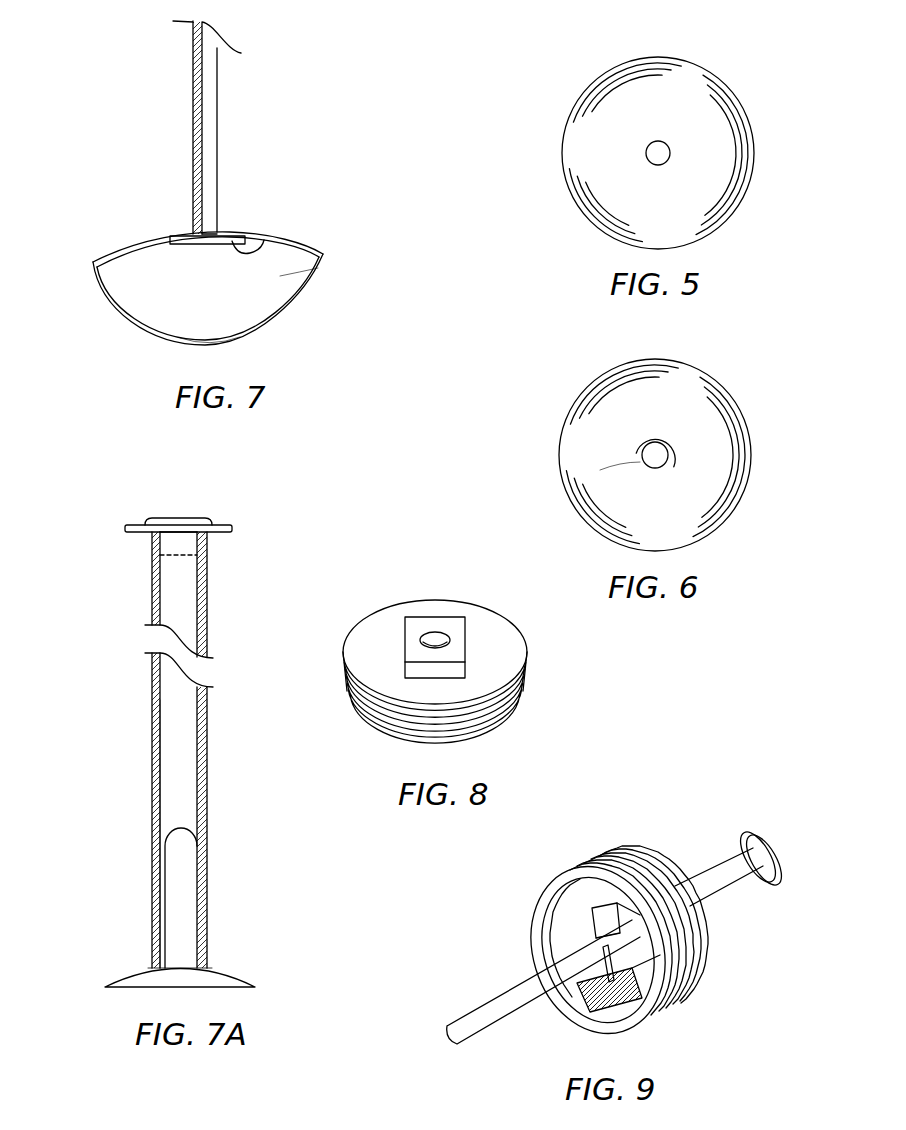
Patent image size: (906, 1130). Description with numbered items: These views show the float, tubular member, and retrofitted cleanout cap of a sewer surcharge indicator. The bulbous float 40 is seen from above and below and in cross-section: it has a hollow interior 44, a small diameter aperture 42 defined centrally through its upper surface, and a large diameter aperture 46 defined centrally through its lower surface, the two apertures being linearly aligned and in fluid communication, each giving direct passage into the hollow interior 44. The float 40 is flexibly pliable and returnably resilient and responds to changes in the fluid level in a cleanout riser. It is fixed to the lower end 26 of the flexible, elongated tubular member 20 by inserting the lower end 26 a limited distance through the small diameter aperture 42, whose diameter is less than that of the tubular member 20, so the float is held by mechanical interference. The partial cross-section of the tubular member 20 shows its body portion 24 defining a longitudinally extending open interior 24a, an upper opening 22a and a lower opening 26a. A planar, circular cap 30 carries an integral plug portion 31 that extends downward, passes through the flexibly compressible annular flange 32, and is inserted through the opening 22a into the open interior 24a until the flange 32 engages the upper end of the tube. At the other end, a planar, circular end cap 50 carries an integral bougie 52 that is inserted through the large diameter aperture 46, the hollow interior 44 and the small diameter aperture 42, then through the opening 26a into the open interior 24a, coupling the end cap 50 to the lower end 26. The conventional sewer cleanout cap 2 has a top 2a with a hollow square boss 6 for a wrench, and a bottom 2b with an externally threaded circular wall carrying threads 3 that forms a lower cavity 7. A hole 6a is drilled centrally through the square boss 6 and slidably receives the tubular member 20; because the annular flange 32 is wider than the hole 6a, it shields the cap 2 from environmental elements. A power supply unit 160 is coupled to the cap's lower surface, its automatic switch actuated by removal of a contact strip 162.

In FIG. 8, the sewer cleanout cap 2 is at (365, 660).
In FIG. 9, the sewer cleanout cap 2 is at (670, 882).
In FIG. 8, the top 2a is at (483, 625).
In FIG. 9, the bottom 2b is at (640, 1027).
In FIG. 8, the threads 3 is at (434, 703).
In FIG. 9, the threads 3 is at (680, 1005).
In FIG. 8, the square boss 6 is at (460, 645).
In FIG. 8, the hole 6a is at (420, 635).
In FIG. 9, the hole 6a is at (612, 921).
In FIG. 9, the lower cavity 7 is at (582, 937).
In FIG. 7, the tubular member 20 is at (193, 106).
In FIG. 7A, the tubular member 20 is at (152, 577).
In FIG. 9, the tubular member 20 is at (490, 1012).
In FIG. 7A, the opening 22a is at (207, 533).
In FIG. 7A, the body portion 24 is at (152, 700).
In FIG. 7A, the open interior 24a is at (172, 780).
In FIG. 7, the lower end 26 is at (217, 228).
In FIG. 7A, the opening 26a is at (160, 968).
In FIG. 7A, the circular cap 30 is at (195, 518).
In FIG. 7A, the plug portion 31 is at (182, 557).
In FIG. 7A, the annular flange 32 is at (142, 523).
In FIG. 9, the annular flange 32 is at (758, 878).
In FIG. 7, the bulbous float 40 is at (93, 262).
In FIG. 5, the bulbous float 40 is at (658, 57).
In FIG. 6, the bulbous float 40 is at (665, 360).
In FIG. 7, the small diameter aperture 42 is at (190, 232).
In FIG. 5, the small diameter aperture 42 is at (665, 142).
In FIG. 6, the small diameter aperture 42 is at (670, 445).
In FIG. 7, the hollow interior 44 is at (285, 275).
In FIG. 6, the hollow interior 44 is at (662, 472).
In FIG. 7, the large diameter aperture 46 is at (210, 346).
In FIG. 6, the large diameter aperture 46 is at (640, 458).
In FIG. 7, the end cap 50 is at (262, 245).
In FIG. 7A, the end cap 50 is at (240, 975).
In FIG. 7A, the bougie 52 is at (190, 910).
In FIG. 9, the power supply unit 160 is at (590, 1007).
In FIG. 9, the contact strip 162 is at (597, 953).